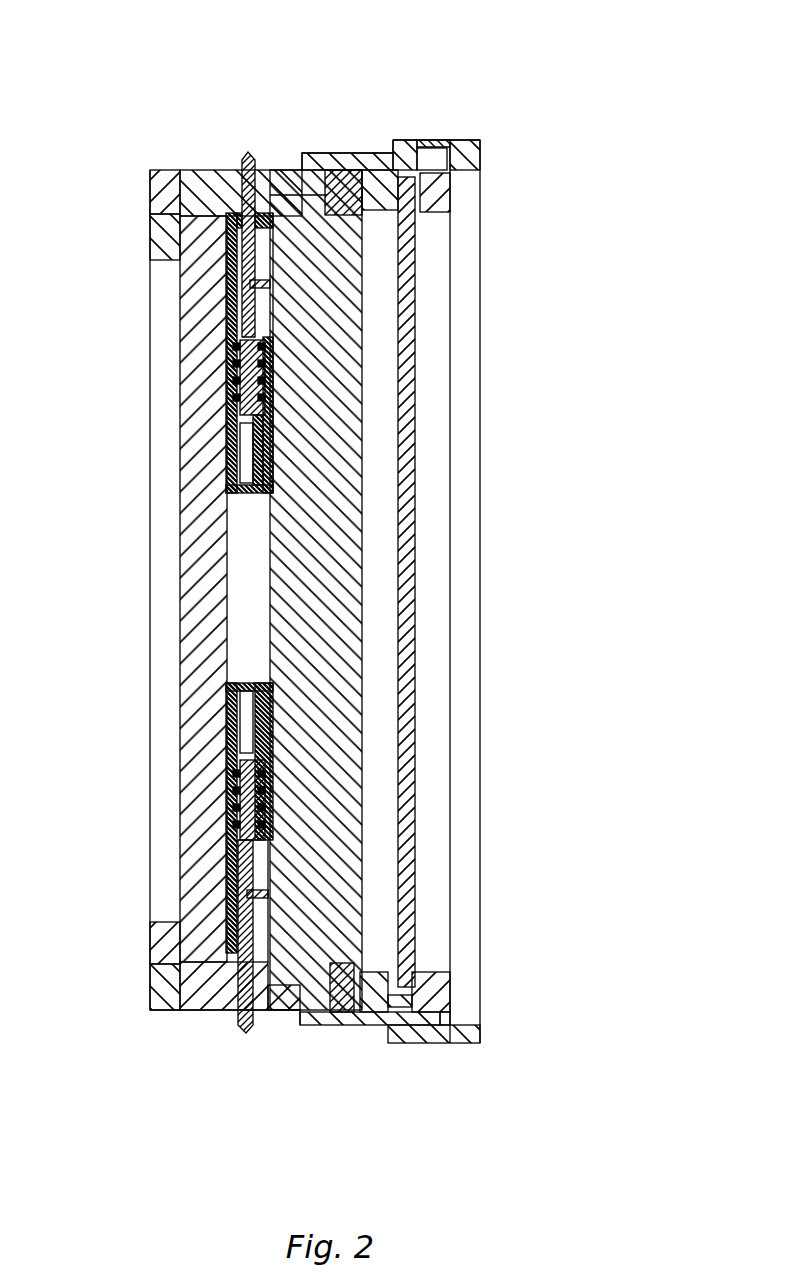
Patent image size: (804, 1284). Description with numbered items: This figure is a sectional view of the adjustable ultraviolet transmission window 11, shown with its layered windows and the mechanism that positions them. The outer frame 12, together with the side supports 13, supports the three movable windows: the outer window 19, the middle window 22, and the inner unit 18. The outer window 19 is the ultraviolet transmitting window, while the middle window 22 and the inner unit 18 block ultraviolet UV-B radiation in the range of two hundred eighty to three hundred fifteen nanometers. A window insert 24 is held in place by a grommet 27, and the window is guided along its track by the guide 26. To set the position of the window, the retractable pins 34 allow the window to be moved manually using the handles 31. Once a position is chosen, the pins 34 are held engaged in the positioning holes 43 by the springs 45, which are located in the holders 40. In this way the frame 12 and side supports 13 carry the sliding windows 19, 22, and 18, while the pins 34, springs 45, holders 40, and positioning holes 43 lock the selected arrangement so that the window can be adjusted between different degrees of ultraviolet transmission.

The adjustable window 11 is at (532, 611).
The outer frame 12 is at (150, 212).
The side supports 13 is at (176, 172).
The inner unit 18 is at (452, 191).
The outer window 19 is at (192, 605).
The middle window 22 is at (342, 907).
The window insert 24 is at (407, 850).
The guide 26 is at (368, 172).
The grommet 27 is at (445, 190).
The handles 31 is at (302, 1027).
The retractable pins 34 is at (243, 160).
The holders 40 is at (225, 744).
The positioning holes 43 is at (337, 1032).
The springs 45 is at (256, 355).